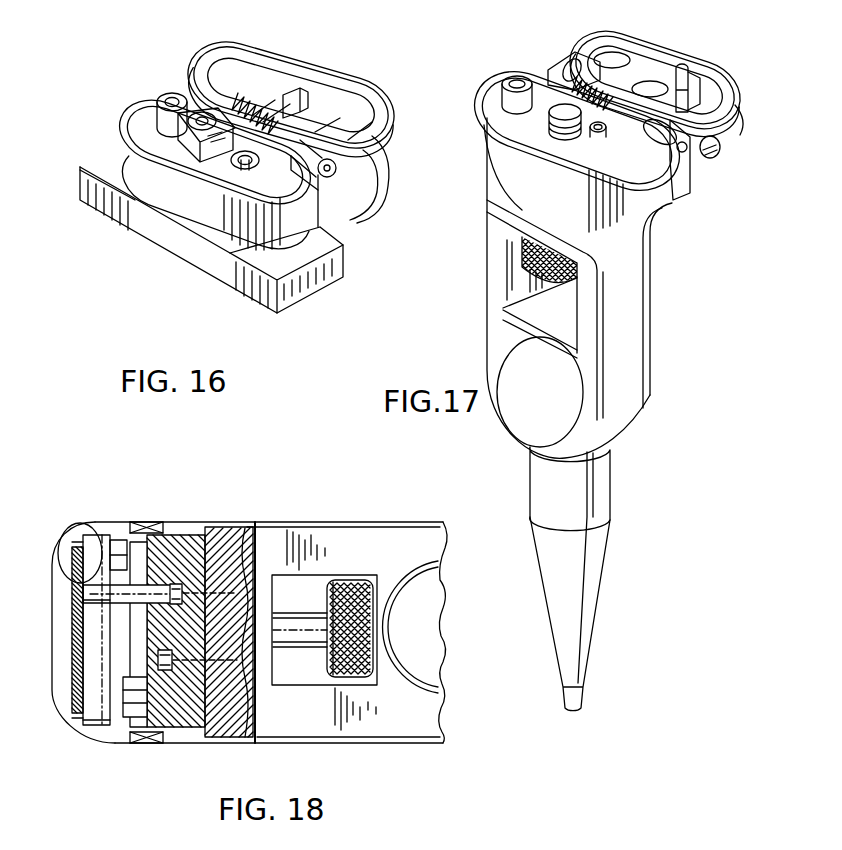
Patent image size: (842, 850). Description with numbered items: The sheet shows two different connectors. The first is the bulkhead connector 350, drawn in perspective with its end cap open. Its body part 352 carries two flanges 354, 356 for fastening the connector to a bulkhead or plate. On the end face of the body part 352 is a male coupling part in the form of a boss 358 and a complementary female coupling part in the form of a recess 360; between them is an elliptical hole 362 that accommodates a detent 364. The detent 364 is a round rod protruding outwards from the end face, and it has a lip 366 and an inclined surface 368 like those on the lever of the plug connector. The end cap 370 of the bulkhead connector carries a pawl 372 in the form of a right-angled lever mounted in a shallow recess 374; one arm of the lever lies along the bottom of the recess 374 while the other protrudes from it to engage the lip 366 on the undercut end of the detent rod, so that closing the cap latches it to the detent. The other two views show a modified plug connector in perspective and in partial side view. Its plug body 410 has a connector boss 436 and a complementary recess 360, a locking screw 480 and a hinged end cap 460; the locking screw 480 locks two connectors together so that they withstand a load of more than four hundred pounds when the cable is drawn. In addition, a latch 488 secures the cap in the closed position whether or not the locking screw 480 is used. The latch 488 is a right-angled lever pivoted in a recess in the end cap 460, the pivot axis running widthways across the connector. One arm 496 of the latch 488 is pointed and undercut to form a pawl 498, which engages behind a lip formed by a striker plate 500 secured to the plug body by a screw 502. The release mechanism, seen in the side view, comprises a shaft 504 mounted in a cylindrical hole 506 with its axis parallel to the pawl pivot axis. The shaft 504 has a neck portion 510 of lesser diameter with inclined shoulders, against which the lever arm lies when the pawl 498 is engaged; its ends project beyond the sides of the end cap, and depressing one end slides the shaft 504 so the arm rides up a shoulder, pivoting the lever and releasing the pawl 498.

In FIG. 16, the bulkhead connector 350 is at (298, 308).
In FIG. 16, the body part 352 is at (183, 183).
In FIG. 16, the flange 354 is at (88, 190).
In FIG. 16, the flange 356 is at (326, 282).
In FIG. 16, the boss 358 is at (158, 100).
In FIG. 16, the recess 360 is at (243, 178).
In FIG. 17, the recess 360 is at (672, 207).
In FIG. 16, the elliptical hole 362 is at (255, 108).
In FIG. 16, the detent 364 is at (182, 142).
In FIG. 16, the lip 366 is at (217, 150).
In FIG. 16, the inclined surface 368 is at (210, 160).
In FIG. 16, the end cap 370 is at (298, 52).
In FIG. 16, the pawl 372 is at (268, 118).
In FIG. 16, the shallow recess 374 is at (300, 96).
In FIG. 17, the plug body 410 is at (637, 310).
In FIG. 17, the connector boss 436 is at (505, 80).
In FIG. 17, the hinged end cap 460 is at (730, 110).
In FIG. 17, the locking screw 480 is at (488, 127).
In FIG. 17, the latch 488 is at (687, 67).
In FIG. 17, the arm 496 is at (673, 66).
In FIG. 17, the pawl 498 is at (630, 43).
In FIG. 18, the pawl 498 is at (168, 560).
In FIG. 17, the striker plate 500 is at (595, 132).
In FIG. 17, the screw 502 is at (555, 125).
In FIG. 17, the shaft 504 is at (705, 157).
In FIG. 18, the shaft 504 is at (93, 543).
In FIG. 18, the cylindrical hole 506 is at (87, 690).
In FIG. 18, the neck portion 510 is at (75, 583).